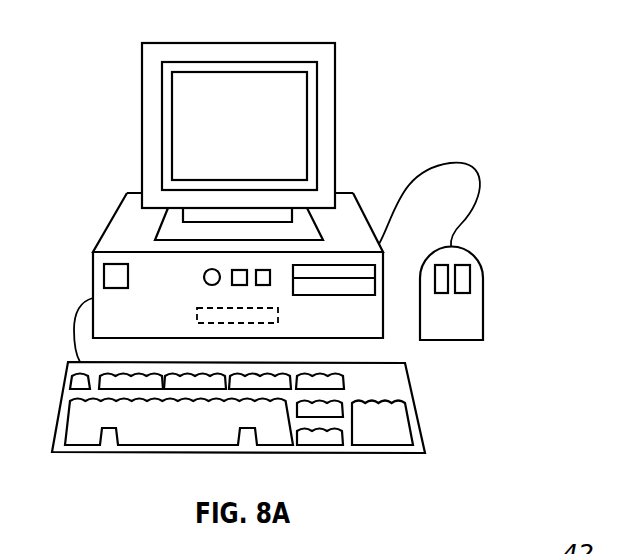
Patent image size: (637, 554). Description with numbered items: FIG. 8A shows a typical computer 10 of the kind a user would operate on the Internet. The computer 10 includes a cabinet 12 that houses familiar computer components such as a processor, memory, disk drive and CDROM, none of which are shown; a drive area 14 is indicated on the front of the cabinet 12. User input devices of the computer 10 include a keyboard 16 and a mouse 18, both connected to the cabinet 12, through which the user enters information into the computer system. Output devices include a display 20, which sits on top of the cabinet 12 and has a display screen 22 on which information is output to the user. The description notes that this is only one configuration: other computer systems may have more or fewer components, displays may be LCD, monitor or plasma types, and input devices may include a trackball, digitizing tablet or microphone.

The computer 10 is at (369, 38).
The cabinet 12 is at (386, 282).
The storage device 14 is at (278, 315).
The keyboard 16 is at (420, 413).
The mouse 18 is at (482, 262).
The display 20 is at (336, 127).
The display screen 22 is at (265, 131).